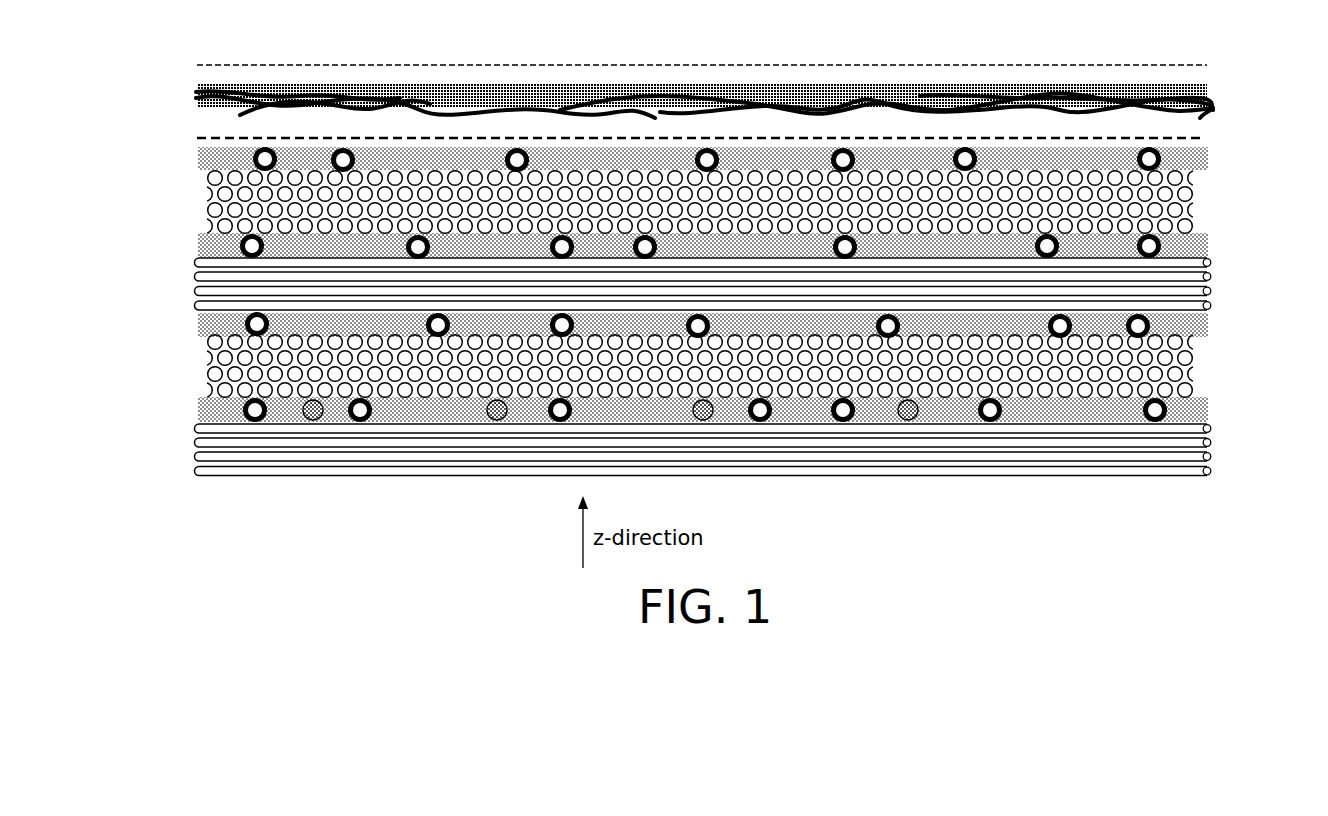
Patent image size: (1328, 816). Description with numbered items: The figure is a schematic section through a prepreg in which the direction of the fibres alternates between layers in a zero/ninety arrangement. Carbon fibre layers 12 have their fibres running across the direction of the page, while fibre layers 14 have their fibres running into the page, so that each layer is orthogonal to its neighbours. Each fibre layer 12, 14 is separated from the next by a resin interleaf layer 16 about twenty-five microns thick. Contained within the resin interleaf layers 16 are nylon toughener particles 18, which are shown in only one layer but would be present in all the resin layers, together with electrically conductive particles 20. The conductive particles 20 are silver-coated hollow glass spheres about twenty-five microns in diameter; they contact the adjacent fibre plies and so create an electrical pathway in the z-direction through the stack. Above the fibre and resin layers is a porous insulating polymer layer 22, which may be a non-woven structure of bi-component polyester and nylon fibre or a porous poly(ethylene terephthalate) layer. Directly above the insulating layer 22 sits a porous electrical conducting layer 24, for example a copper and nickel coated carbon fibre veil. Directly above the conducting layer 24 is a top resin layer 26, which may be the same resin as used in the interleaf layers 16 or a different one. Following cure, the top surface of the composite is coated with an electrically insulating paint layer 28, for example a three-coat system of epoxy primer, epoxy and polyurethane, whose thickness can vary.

The carbon fibre layers 12 is at (1220, 285).
The fibre layers 14 is at (1220, 202).
The resin interleaf layer 16 is at (182, 159).
The nylon toughener particles 18 is at (496, 412).
The electrically conductive particles 20 is at (361, 412).
The porous insulating polymer layer 22 is at (372, 138).
The porous electrical conducting layer 24 is at (485, 115).
The top resin layer 26 is at (922, 90).
The paint layer 28 is at (1050, 65).